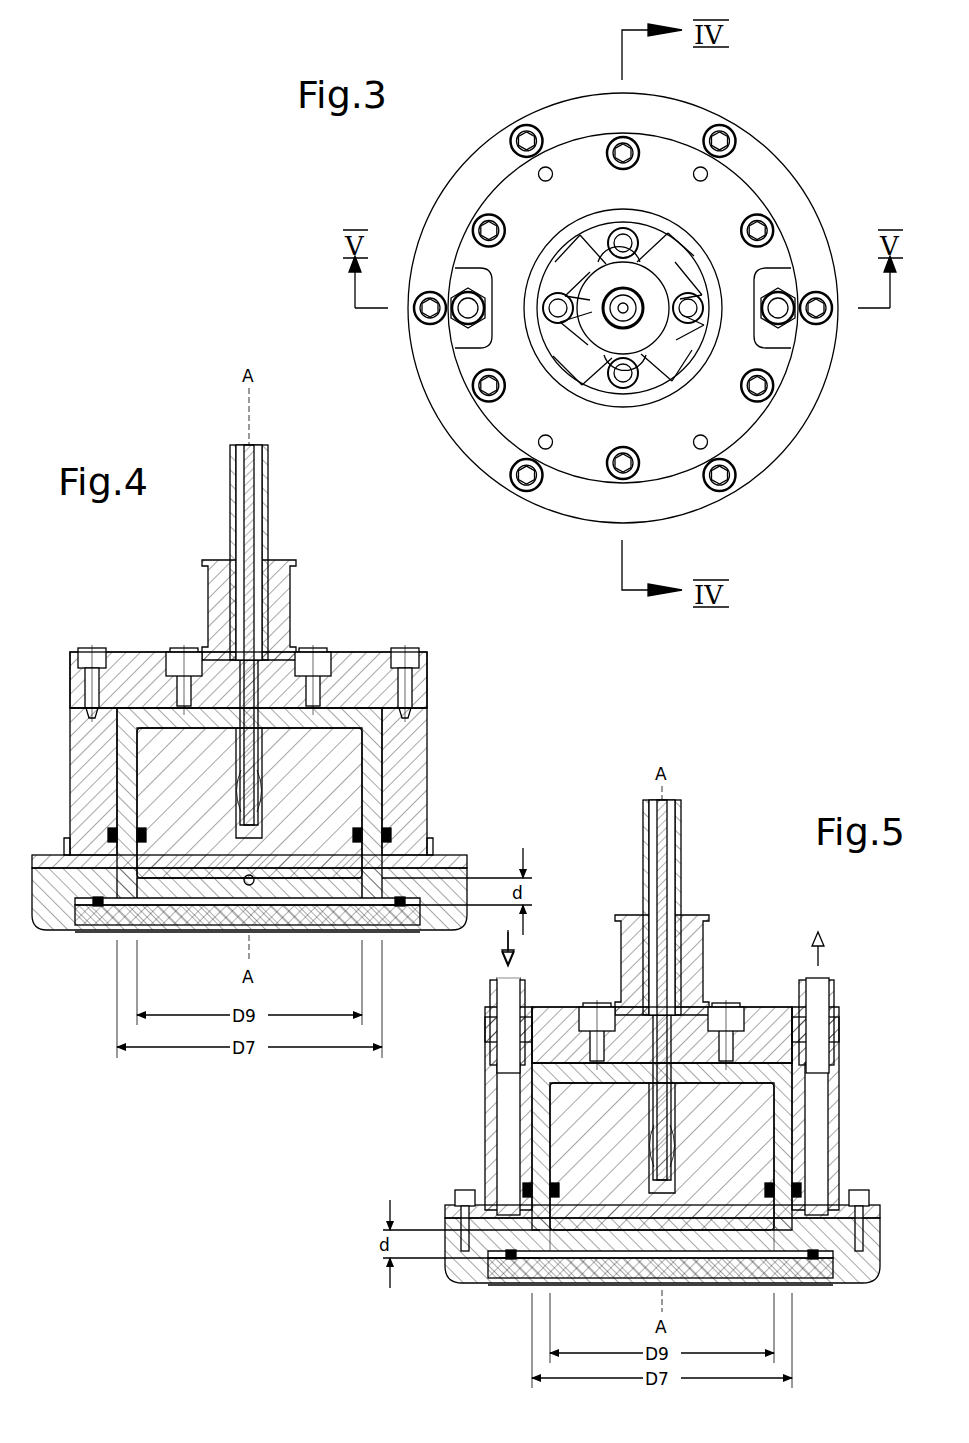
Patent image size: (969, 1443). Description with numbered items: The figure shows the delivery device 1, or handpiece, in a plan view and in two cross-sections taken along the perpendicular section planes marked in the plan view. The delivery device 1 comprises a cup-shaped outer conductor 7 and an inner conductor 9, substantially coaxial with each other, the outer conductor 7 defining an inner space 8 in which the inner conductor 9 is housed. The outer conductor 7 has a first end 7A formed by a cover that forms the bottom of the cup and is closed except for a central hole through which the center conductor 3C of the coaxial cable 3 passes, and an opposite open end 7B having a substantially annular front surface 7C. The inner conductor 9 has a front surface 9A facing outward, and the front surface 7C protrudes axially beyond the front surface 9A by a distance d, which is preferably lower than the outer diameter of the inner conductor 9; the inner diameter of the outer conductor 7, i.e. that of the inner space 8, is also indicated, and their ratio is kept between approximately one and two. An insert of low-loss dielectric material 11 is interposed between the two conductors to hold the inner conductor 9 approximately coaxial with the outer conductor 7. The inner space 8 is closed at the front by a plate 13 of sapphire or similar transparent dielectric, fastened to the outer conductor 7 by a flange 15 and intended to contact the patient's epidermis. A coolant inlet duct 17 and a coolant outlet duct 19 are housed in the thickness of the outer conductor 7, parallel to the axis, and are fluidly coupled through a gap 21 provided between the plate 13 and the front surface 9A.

In FIG. 3, the delivery device 1 is at (826, 150).
In FIG. 4, the delivery device 1 is at (352, 556).
In FIG. 5, the delivery device 1 is at (472, 1082).
In FIG. 3, the coaxial cable 3 is at (610, 338).
In FIG. 4, the coaxial cable 3 is at (230, 526).
In FIG. 5, the coaxial cable 3 is at (643, 822).
In FIG. 3, the center conductor 3C is at (626, 306).
In FIG. 4, the center conductor 3C is at (262, 487).
In FIG. 5, the center conductor 3C is at (678, 845).
In FIG. 3, the outer conductor 7 is at (576, 156).
In FIG. 4, the outer conductor 7 is at (432, 752).
In FIG. 5, the outer conductor 7 is at (483, 1122).
In FIG. 4, the first end 7A is at (366, 665).
In FIG. 5, the first end 7A is at (776, 1012).
In FIG. 4, the open end 7B is at (418, 888).
In FIG. 5, the open end 7B is at (832, 1250).
In FIG. 4, the front surface 7C is at (72, 908).
In FIG. 5, the front surface 7C is at (487, 1262).
In FIG. 4, the inner space 8 is at (137, 893).
In FIG. 5, the inner space 8 is at (568, 1246).
In FIG. 4, the inner conductor 9 is at (249, 803).
In FIG. 5, the inner conductor 9 is at (662, 1156).
In FIG. 4, the front surface 9A is at (205, 884).
In FIG. 5, the front surface 9A is at (602, 1236).
In FIG. 4, the low-loss dielectric material 11 is at (125, 771).
In FIG. 5, the low-loss dielectric material 11 is at (790, 1131).
In FIG. 4, the plate 13 is at (283, 916).
In FIG. 5, the plate 13 is at (620, 1268).
In FIG. 4, the flange 15 is at (52, 925).
In FIG. 5, the flange 15 is at (458, 1280).
In FIG. 3, the coolant inlet duct 17 is at (468, 312).
In FIG. 5, the coolant inlet duct 17 is at (490, 1000).
In FIG. 3, the coolant outlet duct 19 is at (778, 312).
In FIG. 5, the coolant outlet duct 19 is at (837, 1000).
In FIG. 4, the gap 21 is at (312, 886).
In FIG. 5, the gap 21 is at (728, 1243).